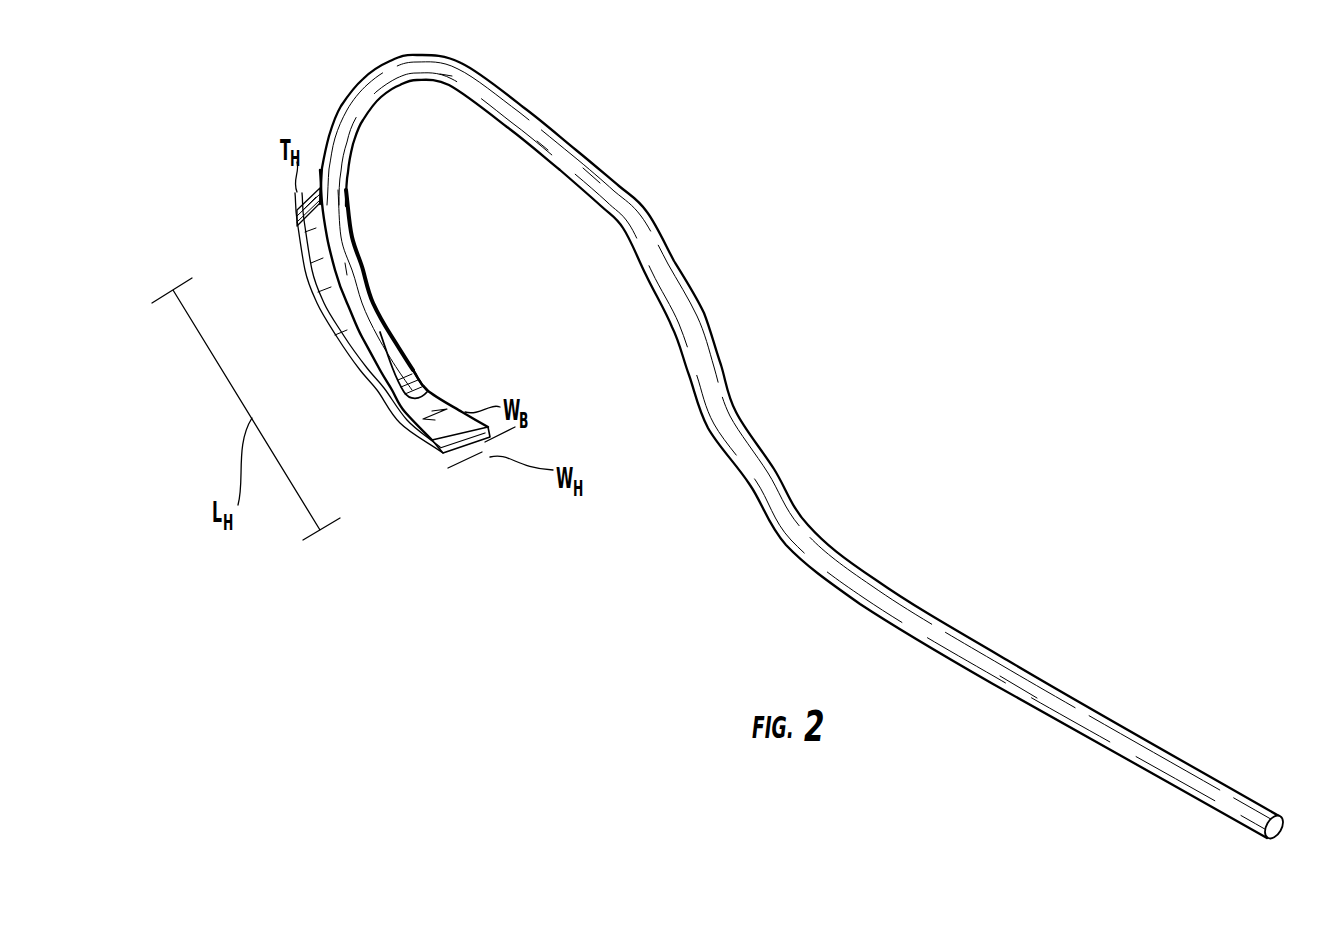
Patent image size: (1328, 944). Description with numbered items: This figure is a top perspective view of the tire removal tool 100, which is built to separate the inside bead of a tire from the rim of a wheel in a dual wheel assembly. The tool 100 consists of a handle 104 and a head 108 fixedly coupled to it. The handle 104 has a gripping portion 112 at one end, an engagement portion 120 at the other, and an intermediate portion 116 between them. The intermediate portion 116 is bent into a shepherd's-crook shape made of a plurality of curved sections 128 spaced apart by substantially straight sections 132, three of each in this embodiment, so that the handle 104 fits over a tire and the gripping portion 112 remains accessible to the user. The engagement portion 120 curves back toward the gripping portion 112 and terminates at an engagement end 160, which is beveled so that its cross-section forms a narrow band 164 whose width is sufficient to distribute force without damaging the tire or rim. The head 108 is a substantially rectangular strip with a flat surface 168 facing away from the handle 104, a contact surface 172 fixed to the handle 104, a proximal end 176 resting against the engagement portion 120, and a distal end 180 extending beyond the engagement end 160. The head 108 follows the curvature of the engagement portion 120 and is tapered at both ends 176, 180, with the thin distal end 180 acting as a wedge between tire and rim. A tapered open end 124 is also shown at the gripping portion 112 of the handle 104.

The tool 100 is at (807, 250).
The handle 104 is at (765, 480).
The head 108 is at (380, 385).
The gripping portion 112 is at (1005, 678).
The intermediate portion 116 is at (583, 168).
The engagement portion 120 is at (345, 263).
The open end of tube 124 is at (1255, 820).
The curved sections 128 is at (440, 74).
The straight sections 132 is at (348, 150).
The engagement end 160 is at (407, 366).
The narrow band 164 is at (430, 384).
The flat surface 168 is at (328, 333).
The contact surface 172 is at (328, 292).
The proximal end 176 is at (300, 231).
The distal end 180 is at (437, 445).